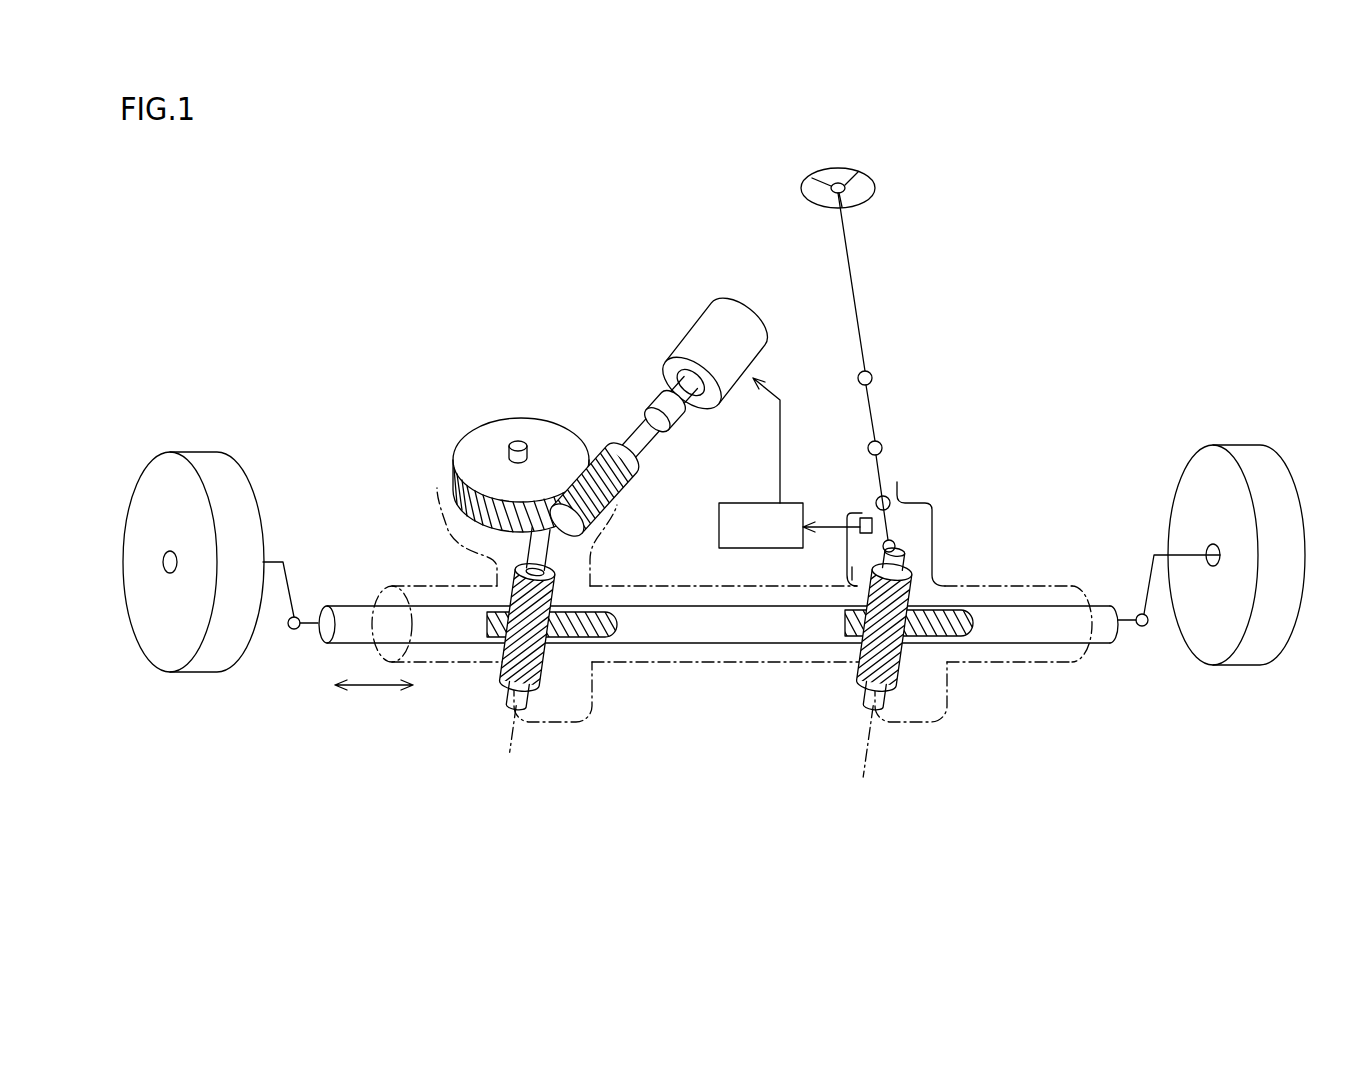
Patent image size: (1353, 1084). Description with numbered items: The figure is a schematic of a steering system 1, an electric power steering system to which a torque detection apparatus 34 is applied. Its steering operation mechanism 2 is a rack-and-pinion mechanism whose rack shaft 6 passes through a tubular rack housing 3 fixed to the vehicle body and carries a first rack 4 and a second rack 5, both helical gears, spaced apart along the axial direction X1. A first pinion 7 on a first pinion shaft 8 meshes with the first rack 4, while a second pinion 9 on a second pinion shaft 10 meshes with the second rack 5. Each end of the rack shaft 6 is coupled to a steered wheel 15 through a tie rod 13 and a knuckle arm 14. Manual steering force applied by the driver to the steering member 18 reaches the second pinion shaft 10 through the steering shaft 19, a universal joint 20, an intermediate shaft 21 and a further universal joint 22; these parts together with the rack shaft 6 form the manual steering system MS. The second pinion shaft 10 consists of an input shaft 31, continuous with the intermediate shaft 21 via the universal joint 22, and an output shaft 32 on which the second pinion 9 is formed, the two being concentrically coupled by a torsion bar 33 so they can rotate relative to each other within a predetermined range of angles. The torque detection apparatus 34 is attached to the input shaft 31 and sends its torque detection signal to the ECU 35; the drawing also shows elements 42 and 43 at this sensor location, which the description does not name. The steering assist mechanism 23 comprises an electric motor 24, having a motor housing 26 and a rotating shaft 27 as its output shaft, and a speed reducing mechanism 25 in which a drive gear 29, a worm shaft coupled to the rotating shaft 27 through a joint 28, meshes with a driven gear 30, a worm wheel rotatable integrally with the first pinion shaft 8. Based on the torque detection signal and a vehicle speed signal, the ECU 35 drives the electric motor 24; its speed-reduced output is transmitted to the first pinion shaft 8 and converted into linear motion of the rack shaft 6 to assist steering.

The steering system 1 is at (880, 324).
The steering operation mechanism 2 is at (718, 656).
The rack housing 3 is at (847, 663).
The first rack 4 is at (597, 622).
The second rack 5 is at (957, 620).
The rack shaft 6 is at (757, 644).
The first pinion 7 is at (542, 700).
The first pinion shaft 8 is at (525, 655).
The second pinion 9 is at (908, 700).
The second pinion shaft 10 is at (927, 650).
The tie rod 13 is at (310, 630).
The knuckle arm 14 is at (292, 585).
The steered wheel 15 is at (162, 652).
The steering member 18 is at (833, 168).
The steering shaft 19 is at (852, 273).
The universal joint 20 is at (872, 378).
The intermediate shaft 21 is at (870, 410).
The universal joint 22 is at (868, 448).
The steering assist mechanism 23 is at (640, 388).
The electric motor 24 is at (741, 331).
The speed reducing mechanism 25 is at (549, 432).
The motor housing 26 is at (753, 338).
The rotating shaft 27 is at (685, 388).
The joint 28 is at (697, 387).
The drive gear 29 is at (594, 451).
The driven gear 30 is at (527, 432).
The input shaft 31 is at (885, 465).
The output shaft 32 is at (862, 567).
The torsion bar 33 is at (892, 527).
The torque detection apparatus 34 is at (905, 521).
The electronic control unit 35 is at (719, 525).
The sensor element 42 is at (862, 510).
The sensor housing 43 is at (903, 498).
The manual steering system MS is at (758, 218).
The axial direction X1 is at (373, 688).